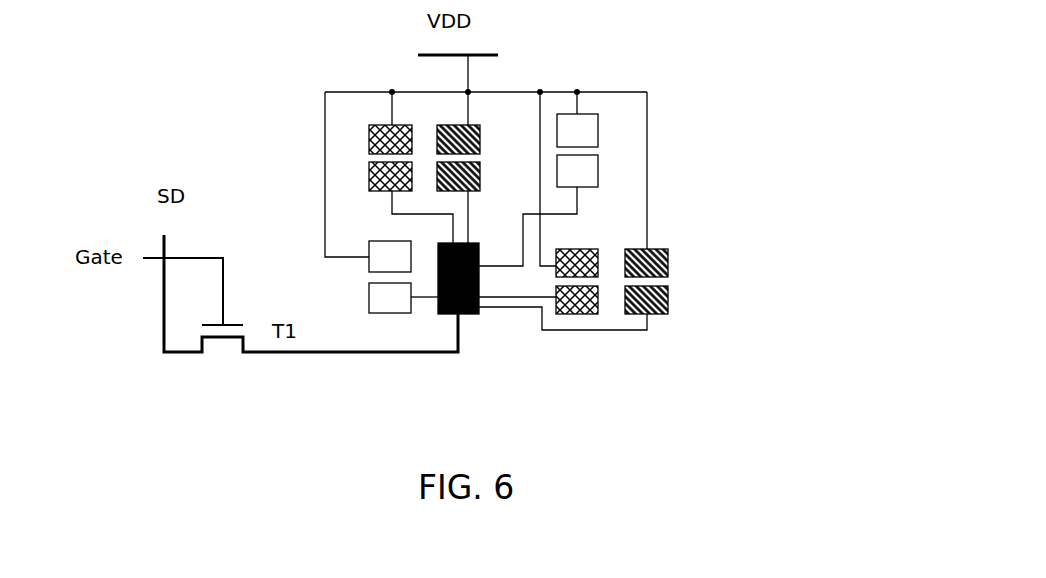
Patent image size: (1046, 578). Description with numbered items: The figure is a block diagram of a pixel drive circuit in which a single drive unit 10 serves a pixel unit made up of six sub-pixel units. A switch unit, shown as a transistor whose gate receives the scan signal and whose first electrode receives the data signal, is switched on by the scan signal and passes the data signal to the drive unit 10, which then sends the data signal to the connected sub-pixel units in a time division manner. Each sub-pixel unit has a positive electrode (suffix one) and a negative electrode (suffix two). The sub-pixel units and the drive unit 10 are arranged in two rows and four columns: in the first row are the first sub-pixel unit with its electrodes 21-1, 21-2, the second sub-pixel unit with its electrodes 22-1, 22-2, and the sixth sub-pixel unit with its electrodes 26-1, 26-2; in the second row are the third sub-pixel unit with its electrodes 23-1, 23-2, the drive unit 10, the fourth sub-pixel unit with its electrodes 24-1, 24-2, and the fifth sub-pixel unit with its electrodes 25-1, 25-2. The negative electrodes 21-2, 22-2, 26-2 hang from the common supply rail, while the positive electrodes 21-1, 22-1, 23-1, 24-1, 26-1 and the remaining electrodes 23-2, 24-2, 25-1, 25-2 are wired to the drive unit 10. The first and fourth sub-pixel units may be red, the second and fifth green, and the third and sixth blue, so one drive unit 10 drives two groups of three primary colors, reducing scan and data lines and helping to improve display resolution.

The drive unit 10 is at (463, 313).
The positive electrode of first sub-pixel unit 21-1 is at (370, 178).
The negative electrode of first sub-pixel unit 21-2 is at (370, 137).
The positive electrode of second sub-pixel unit 22-1 is at (479, 173).
The negative electrode of second sub-pixel unit 22-2 is at (479, 137).
The positive electrode of third sub-pixel unit 23-1 is at (367, 286).
The negative electrode of third sub-pixel unit 23-2 is at (367, 248).
The positive electrode of fourth sub-pixel unit 24-1 is at (598, 269).
The negative electrode of fourth sub-pixel unit 24-2 is at (591, 313).
The positive electrode of fifth sub-pixel unit 25-1 is at (668, 305).
The negative electrode of fifth sub-pixel unit 25-2 is at (668, 262).
The positive electrode of sixth sub-pixel unit 26-1 is at (598, 133).
The negative electrode of sixth sub-pixel unit 26-2 is at (598, 177).